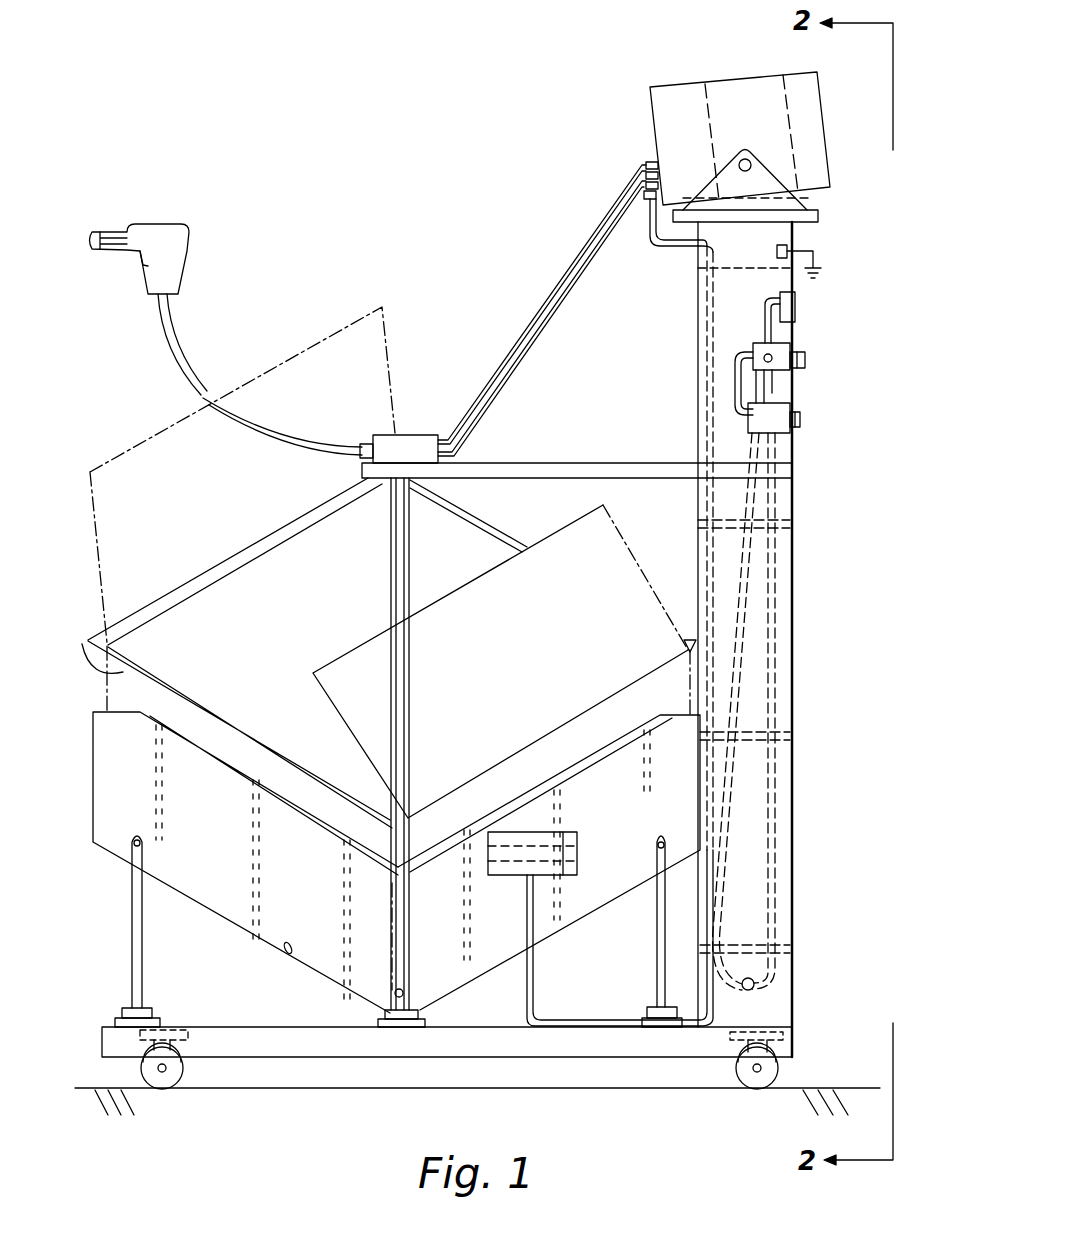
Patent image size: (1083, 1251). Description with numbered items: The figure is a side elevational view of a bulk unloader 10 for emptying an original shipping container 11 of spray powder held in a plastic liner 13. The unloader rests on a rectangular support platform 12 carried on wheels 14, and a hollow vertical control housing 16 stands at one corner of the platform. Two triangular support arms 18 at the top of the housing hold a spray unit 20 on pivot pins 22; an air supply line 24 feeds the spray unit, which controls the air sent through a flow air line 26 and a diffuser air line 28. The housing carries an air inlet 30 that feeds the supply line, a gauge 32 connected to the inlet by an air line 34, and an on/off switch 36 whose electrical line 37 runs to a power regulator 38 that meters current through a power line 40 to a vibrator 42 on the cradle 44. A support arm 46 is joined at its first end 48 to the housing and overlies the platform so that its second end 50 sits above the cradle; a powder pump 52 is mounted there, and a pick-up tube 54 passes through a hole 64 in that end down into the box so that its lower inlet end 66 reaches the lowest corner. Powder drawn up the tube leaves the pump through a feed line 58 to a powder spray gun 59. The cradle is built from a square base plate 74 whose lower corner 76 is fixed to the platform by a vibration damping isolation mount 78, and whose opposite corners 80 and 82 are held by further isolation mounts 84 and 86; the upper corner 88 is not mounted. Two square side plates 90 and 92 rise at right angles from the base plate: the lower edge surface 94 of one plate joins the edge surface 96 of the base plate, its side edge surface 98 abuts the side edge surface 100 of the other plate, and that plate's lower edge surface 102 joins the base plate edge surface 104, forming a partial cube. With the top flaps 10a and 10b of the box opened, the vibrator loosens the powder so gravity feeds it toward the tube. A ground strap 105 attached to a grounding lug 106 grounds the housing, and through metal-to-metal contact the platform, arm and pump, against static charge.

The bulk unloader 10 is at (132, 433).
The top flap 10a is at (357, 340).
The top flap 10b is at (622, 533).
The shipping container 11 is at (517, 533).
The support platform 12 is at (593, 1042).
The plastic liner 13 is at (97, 656).
The wheels 14 is at (778, 1075).
The control housing 16 is at (793, 630).
The triangular support arms 18 is at (798, 207).
The spray unit 20 is at (675, 103).
The pivot pins 22 is at (750, 160).
The air supply line 24 is at (705, 605).
The flow air line 26 is at (495, 372).
The diffuser air line 28 is at (507, 380).
The air inlet 30 is at (757, 987).
The gauge 32 is at (780, 310).
The air line 34 is at (780, 330).
The on/off switch 36 is at (780, 420).
The electrical line 37 is at (733, 370).
The power regulator 38 is at (777, 360).
The power line 40 is at (705, 568).
The vibrator 42 is at (480, 840).
The cradle 44 is at (233, 978).
The support arm 46 is at (565, 463).
The first end 48 is at (733, 470).
The second end 50 is at (367, 478).
The powder pump 52 is at (400, 450).
The pick-up tube 54 is at (410, 570).
The feed line 58 is at (248, 418).
The powder spray gun 59 is at (155, 228).
The hole 64 is at (470, 480).
The lower inlet end 66 is at (410, 990).
The base plate 74 is at (485, 740).
The lower corner 76 is at (415, 1013).
The vibration damping isolation mount 78 is at (112, 738).
The corner 80 is at (93, 842).
The corner 82 is at (718, 860).
The vibration damping isolation mount 84 is at (135, 980).
The vibration damping isolation mount 86 is at (657, 973).
The upper corner 88 is at (412, 663).
The side plate 90 is at (113, 775).
The side plate 92 is at (683, 787).
The lower edge surface 94 is at (248, 928).
The edge surface 96 is at (287, 953).
The side edge surface 98 is at (382, 938).
The side edge surface 100 is at (407, 913).
The lower edge surface 102 is at (623, 890).
The edge surface 104 is at (627, 893).
The ground strap 105 is at (810, 250).
The grounding lug 106 is at (777, 253).